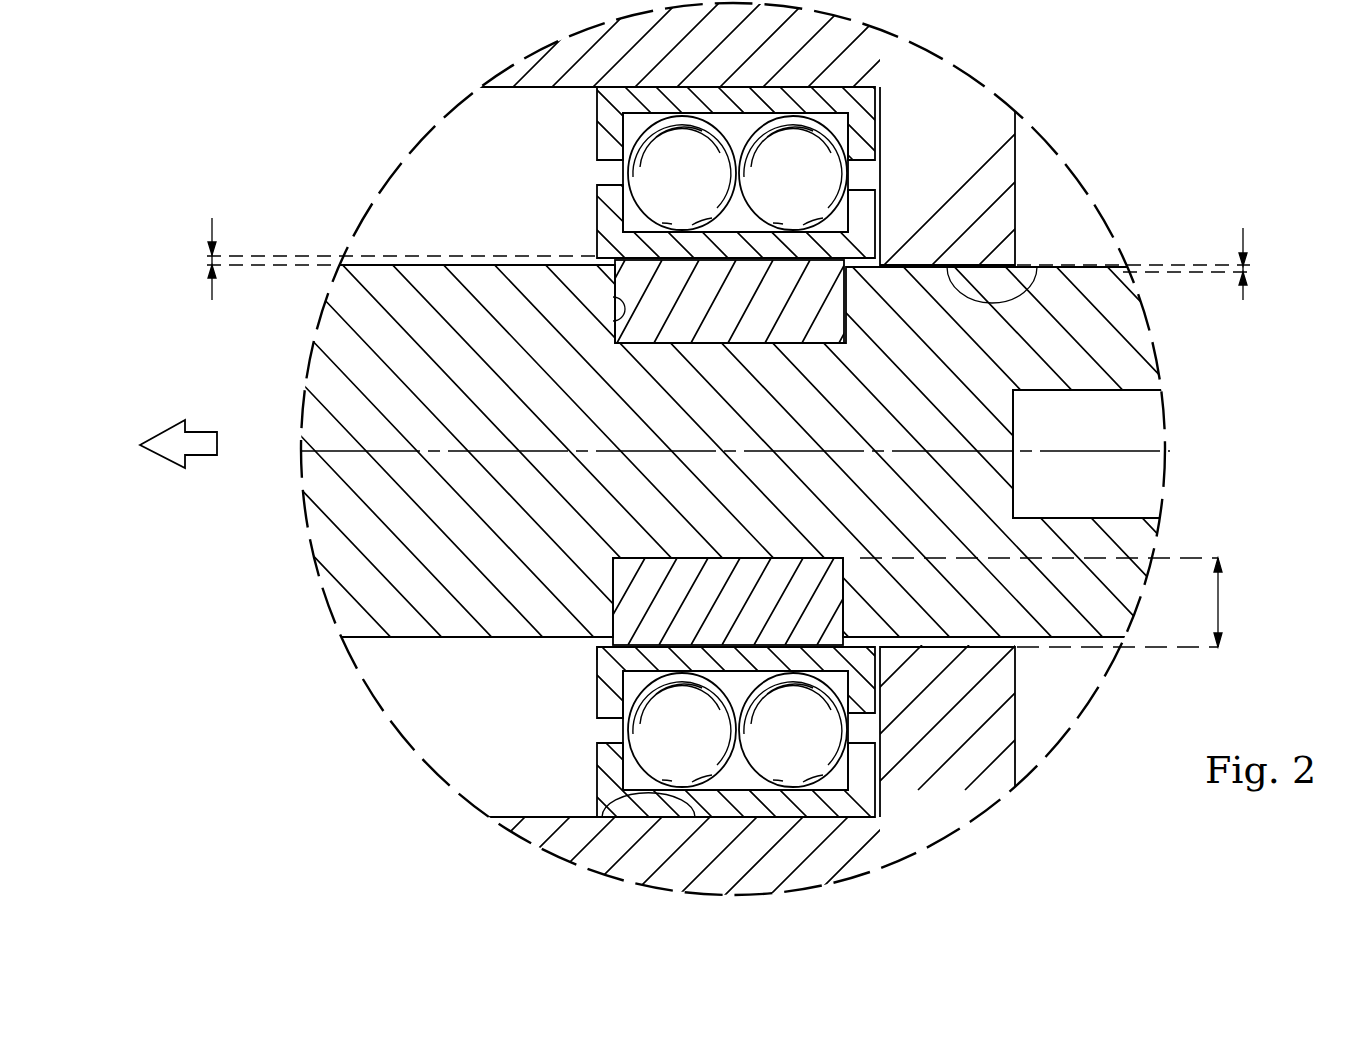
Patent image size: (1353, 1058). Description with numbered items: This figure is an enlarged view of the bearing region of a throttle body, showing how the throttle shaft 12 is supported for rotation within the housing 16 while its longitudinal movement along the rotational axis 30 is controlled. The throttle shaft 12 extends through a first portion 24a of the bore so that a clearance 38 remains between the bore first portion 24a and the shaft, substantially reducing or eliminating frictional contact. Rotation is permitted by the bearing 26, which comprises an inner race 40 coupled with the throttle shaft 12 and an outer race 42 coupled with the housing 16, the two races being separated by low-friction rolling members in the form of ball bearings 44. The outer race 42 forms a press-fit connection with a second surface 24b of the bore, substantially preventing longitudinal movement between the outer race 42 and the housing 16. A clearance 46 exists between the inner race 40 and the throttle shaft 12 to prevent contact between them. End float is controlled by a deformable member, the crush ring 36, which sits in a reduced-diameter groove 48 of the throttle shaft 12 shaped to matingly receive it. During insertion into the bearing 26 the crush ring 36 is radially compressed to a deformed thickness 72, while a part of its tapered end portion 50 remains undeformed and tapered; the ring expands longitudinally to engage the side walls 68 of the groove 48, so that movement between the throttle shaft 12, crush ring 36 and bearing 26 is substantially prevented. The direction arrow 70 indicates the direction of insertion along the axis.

The throttle shaft 12 is at (950, 266).
The housing 16 is at (1000, 697).
The first portion of the bore 24a is at (1040, 270).
The second surface of the bore 24b is at (600, 817).
The bearing 26 is at (545, 163).
The rotational axis 30 is at (1123, 450).
The crush ring 36 is at (600, 612).
The clearance 38 is at (1243, 232).
The inner race 40 is at (905, 165).
The outer race 42 is at (870, 122).
The ball bearings 44 is at (668, 517).
The clearance 46 is at (210, 230).
The groove 48 is at (758, 343).
The tapered end portion 50 is at (597, 647).
The side walls of the groove 68 is at (610, 321).
The axial load direction 70 is at (200, 458).
The deformed thickness 72 is at (1222, 605).